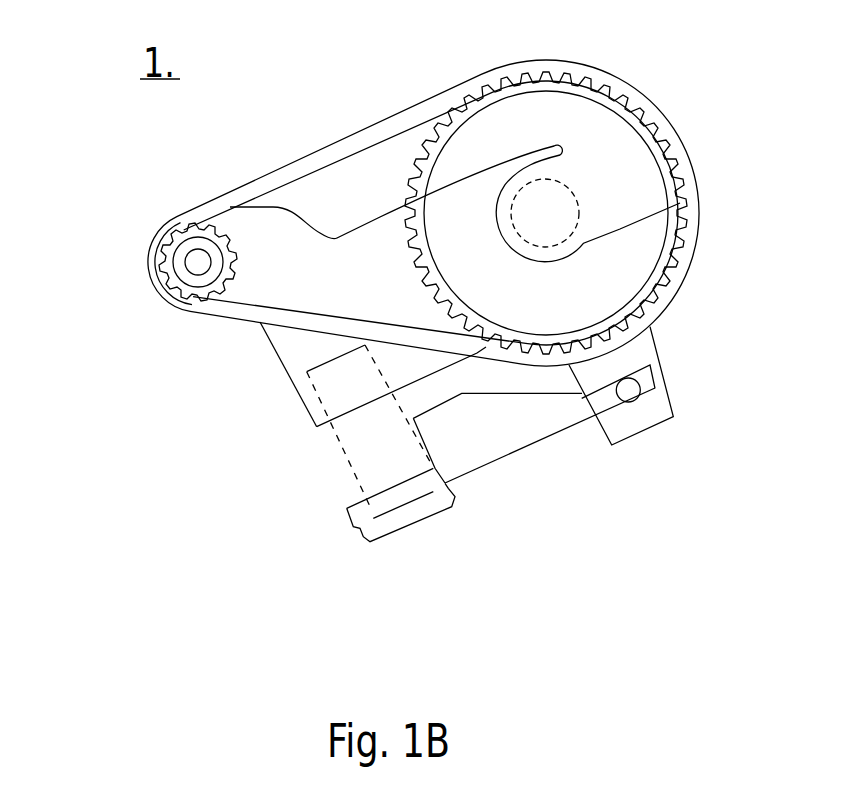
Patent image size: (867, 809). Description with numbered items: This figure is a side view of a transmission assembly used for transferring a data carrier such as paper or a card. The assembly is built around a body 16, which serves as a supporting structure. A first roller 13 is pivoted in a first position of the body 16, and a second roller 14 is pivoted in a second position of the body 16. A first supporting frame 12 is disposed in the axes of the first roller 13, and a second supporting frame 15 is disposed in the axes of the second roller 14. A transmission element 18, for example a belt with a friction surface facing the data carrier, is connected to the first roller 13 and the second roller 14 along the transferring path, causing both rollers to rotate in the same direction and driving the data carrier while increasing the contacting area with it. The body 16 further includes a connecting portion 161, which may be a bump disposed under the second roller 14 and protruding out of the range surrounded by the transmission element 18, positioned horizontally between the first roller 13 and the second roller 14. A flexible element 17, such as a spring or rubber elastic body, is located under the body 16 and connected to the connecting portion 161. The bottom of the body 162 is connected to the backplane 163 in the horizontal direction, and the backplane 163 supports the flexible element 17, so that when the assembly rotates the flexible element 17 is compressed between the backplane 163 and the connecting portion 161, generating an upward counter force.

The first supporting frame 12 is at (577, 192).
The first roller 13 is at (647, 117).
The second roller 14 is at (160, 246).
The second supporting frame 15 is at (177, 298).
The body 16 is at (273, 207).
The connecting portion 161 is at (296, 380).
The bottom of the body 162 is at (658, 382).
The backplane 163 is at (515, 452).
The flexible element 17 is at (350, 466).
The transmission element 18 is at (357, 131).